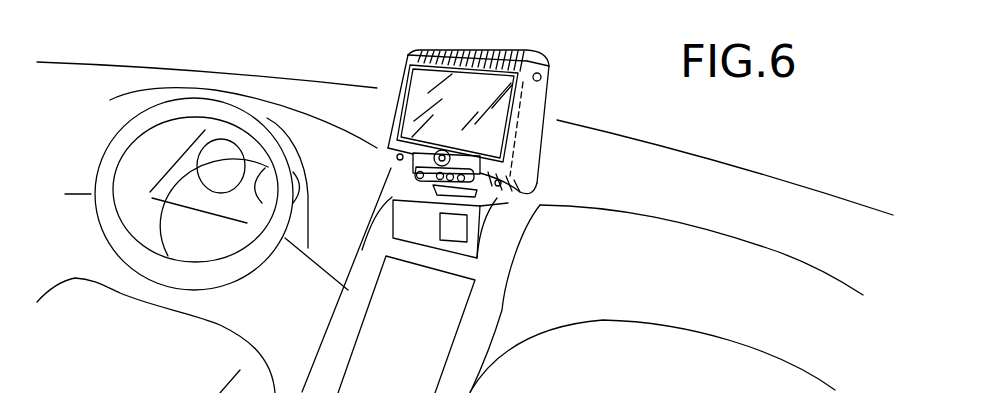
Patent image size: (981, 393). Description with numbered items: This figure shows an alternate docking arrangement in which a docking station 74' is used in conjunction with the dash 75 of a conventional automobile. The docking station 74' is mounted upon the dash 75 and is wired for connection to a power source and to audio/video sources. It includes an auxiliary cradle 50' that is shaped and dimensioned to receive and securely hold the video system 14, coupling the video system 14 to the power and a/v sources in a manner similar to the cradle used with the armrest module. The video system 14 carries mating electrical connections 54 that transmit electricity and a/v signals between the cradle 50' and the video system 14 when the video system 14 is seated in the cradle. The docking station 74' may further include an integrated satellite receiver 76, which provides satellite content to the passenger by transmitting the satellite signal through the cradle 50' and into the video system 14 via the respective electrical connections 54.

The video system 14 is at (459, 103).
The mating electrical connections 54 is at (423, 184).
The auxiliary cradle 50' is at (307, 204).
The docking station 74' is at (406, 324).
The dash 75 is at (620, 167).
The integrated satellite receiver 76 is at (457, 232).